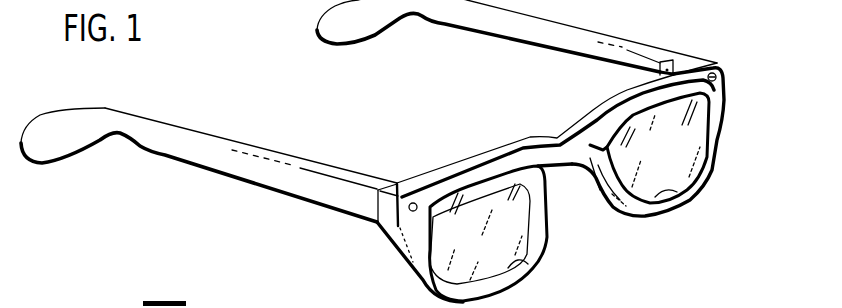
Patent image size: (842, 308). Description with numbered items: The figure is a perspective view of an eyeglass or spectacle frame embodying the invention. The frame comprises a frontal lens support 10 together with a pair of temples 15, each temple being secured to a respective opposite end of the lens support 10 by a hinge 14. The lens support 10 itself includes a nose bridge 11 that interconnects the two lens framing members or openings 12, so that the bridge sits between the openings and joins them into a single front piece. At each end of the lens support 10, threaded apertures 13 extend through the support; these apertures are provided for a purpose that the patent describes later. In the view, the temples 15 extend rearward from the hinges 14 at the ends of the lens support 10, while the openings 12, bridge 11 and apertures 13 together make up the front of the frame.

The frontal lens support 10 is at (499, 144).
The nose bridge 11 is at (570, 166).
The lens framing members or openings 12 is at (530, 267).
The threaded apertures 13 is at (412, 212).
The hinges 14 is at (673, 72).
The temples 15 is at (272, 156).